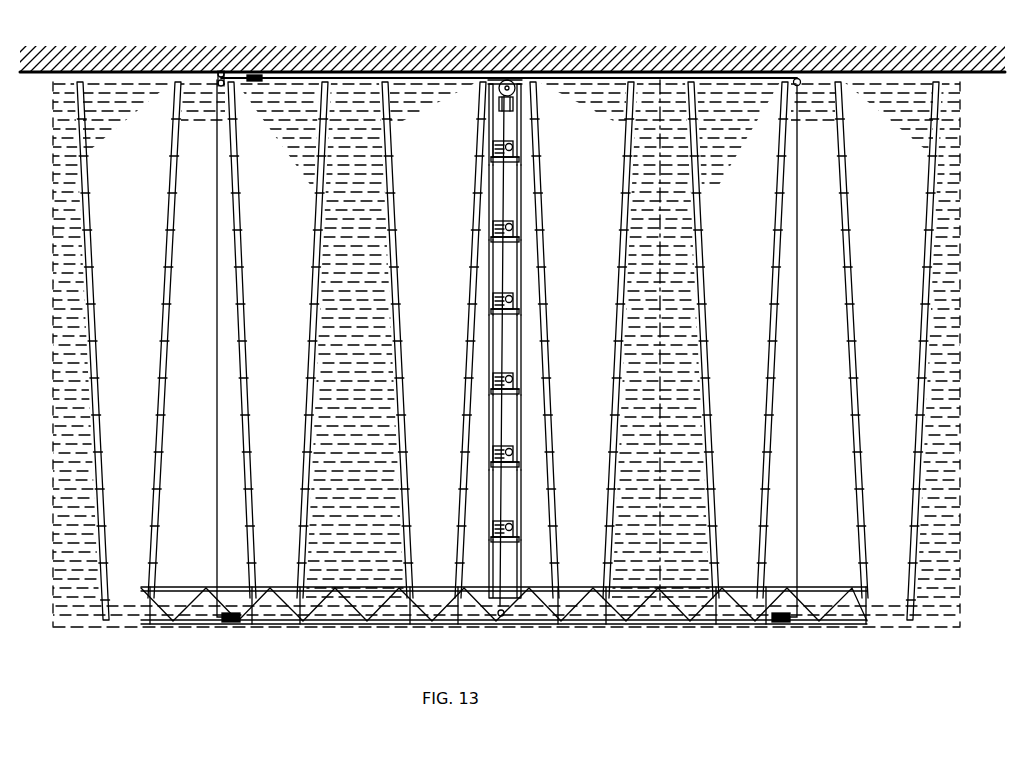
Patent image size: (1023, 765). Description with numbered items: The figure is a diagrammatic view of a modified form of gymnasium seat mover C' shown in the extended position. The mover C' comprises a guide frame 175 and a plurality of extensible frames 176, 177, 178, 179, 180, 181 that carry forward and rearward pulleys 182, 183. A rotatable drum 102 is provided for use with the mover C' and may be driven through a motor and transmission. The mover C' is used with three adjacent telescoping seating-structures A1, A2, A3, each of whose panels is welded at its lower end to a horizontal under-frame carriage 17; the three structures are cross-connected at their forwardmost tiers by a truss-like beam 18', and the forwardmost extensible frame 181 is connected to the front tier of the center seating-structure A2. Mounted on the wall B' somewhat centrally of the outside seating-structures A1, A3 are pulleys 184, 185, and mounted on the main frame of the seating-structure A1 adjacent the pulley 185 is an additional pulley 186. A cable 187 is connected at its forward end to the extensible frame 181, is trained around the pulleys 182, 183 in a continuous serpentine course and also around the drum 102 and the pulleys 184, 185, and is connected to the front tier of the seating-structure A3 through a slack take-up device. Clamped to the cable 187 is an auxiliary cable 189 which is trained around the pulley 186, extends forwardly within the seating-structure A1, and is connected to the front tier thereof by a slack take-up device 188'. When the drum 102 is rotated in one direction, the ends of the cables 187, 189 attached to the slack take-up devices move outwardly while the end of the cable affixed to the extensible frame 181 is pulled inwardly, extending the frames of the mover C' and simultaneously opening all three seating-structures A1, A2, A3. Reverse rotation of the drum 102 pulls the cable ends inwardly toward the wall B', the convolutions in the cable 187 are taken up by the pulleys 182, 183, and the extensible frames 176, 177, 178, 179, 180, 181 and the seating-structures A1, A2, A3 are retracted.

The horizontal under-frame carriage 17 is at (321, 250).
The truss-like beam 18' is at (504, 595).
The rotatable drum 102 is at (521, 92).
The guide frame 175 is at (523, 140).
The extensible frame 176 is at (524, 190).
The extensible frame 177 is at (523, 283).
The extensible frame 178 is at (523, 360).
The extensible frame 179 is at (523, 440).
The extensible frame 180 is at (523, 496).
The forwardmost extensible frame 181 is at (521, 566).
The forward pulley 182 is at (518, 150).
The rearward pulley 183 is at (494, 159).
The pulley 184 is at (797, 79).
The pulley 185 is at (233, 77).
The additional pulley 186 is at (220, 70).
The cable 187 is at (470, 80).
The slack take-up device 188' is at (531, 634).
The auxiliary cable 189 is at (216, 250).
The telescoping seating-structure A1 is at (187, 631).
The telescoping seating-structure A2 is at (485, 631).
The telescoping seating-structure A3 is at (767, 631).
The wall B' is at (669, 315).
The gymnasium seat mover C' is at (571, 41).